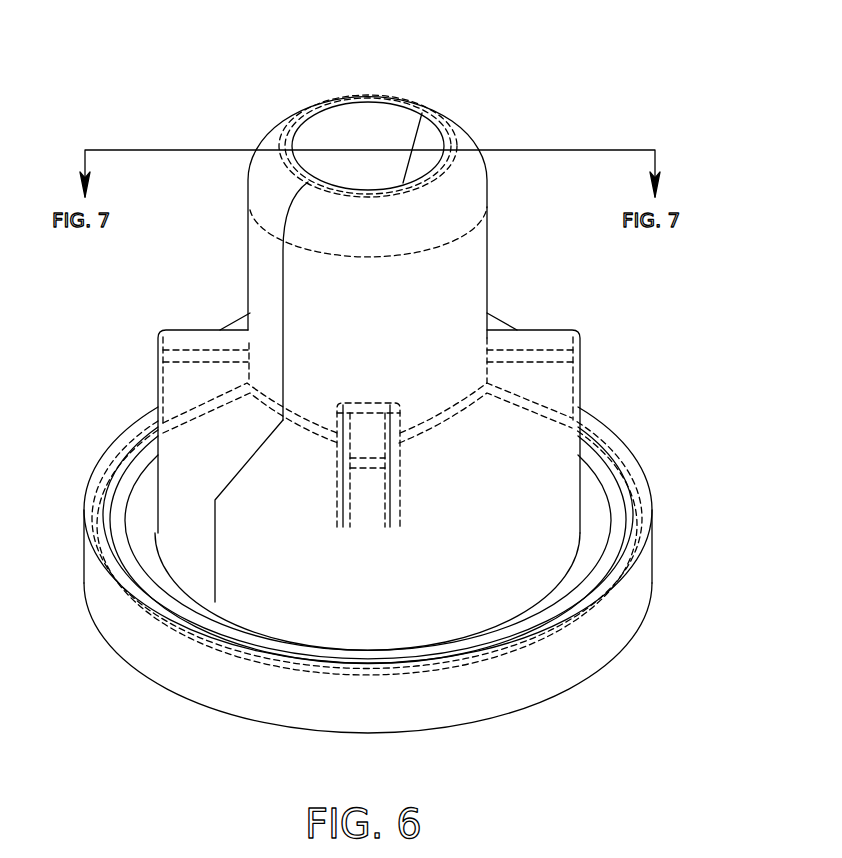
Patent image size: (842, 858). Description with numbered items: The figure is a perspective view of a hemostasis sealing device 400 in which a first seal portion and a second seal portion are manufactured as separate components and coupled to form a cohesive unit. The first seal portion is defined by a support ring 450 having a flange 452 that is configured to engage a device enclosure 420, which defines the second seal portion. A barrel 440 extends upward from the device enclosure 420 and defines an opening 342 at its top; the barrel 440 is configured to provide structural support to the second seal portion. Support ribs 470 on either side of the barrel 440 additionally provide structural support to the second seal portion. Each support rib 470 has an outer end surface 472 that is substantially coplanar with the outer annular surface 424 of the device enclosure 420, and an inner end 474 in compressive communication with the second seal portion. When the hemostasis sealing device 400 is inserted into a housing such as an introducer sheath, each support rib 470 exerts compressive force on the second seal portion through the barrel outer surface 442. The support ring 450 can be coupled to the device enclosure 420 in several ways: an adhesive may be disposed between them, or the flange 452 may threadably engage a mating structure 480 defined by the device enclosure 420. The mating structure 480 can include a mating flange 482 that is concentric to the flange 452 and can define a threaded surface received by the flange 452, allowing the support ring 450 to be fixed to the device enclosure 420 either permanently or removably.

The hemostasis sealing device 400 is at (280, 76).
The opening 342 is at (350, 136).
The barrel 440 is at (459, 276).
The barrel outer surface 442 is at (437, 324).
The support ribs 470 is at (177, 343).
The inner end 474 is at (250, 342).
The outer end surface 472 is at (157, 385).
The mating flange 482 is at (592, 517).
The mating structure 480 is at (610, 497).
The flange 452 is at (642, 508).
The outer annular surface 424 is at (180, 532).
The device enclosure 420 is at (330, 603).
The support ring 450 is at (600, 640).